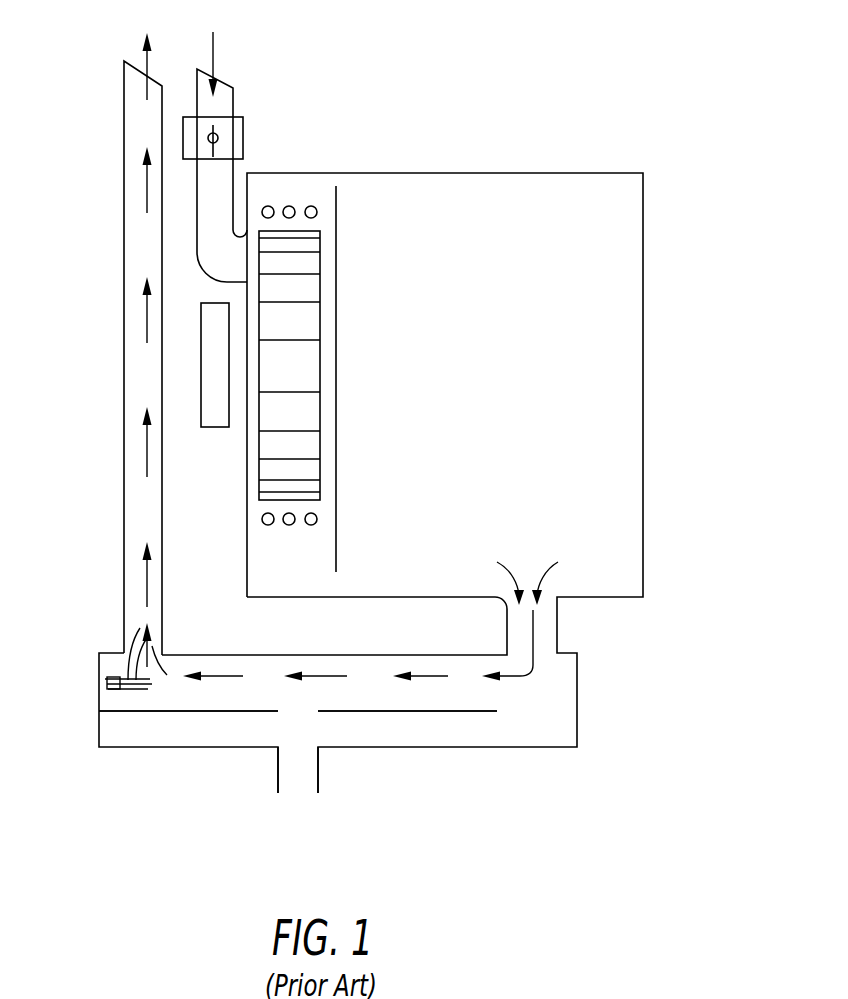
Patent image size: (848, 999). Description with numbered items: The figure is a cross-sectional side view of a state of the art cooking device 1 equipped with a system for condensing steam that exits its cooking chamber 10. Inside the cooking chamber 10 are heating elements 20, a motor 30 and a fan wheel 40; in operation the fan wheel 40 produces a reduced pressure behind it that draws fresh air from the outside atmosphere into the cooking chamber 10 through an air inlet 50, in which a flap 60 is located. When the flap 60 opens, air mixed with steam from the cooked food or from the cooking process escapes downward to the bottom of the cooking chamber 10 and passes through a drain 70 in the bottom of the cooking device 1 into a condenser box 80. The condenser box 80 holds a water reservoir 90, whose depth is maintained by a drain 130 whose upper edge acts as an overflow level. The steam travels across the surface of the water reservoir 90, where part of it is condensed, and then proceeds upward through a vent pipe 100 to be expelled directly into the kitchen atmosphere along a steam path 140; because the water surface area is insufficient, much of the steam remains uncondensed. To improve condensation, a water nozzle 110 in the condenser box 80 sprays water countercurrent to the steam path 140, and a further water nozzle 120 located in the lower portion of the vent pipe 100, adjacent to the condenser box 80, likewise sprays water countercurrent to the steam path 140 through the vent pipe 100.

The cooking device 1 is at (543, 76).
The cooking chamber 10 is at (612, 224).
The heating elements 20 is at (289, 206).
The motor 30 is at (215, 363).
The fan wheel 40 is at (300, 445).
The air inlet 50 is at (222, 90).
The flap 60 is at (206, 128).
The drain 70 is at (547, 600).
The condenser box 80 is at (557, 677).
The water reservoir 90 is at (558, 730).
The vent pipe 100 is at (150, 518).
The water nozzle 110 is at (107, 683).
The water nozzle 120 is at (140, 618).
The drain 130 is at (296, 757).
The steam path 140 is at (430, 676).